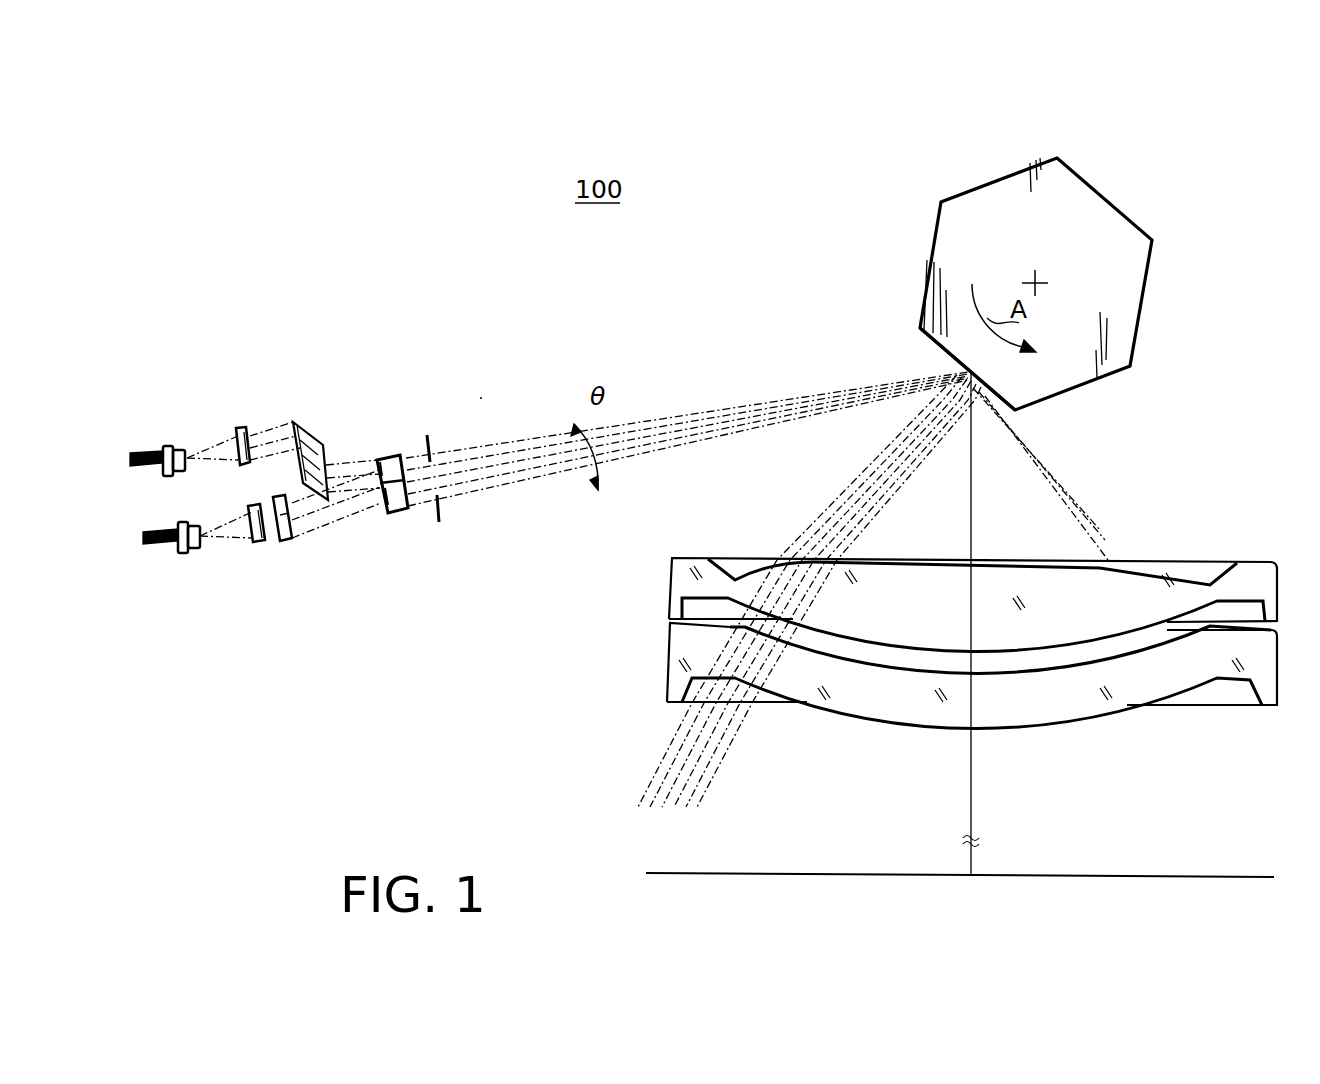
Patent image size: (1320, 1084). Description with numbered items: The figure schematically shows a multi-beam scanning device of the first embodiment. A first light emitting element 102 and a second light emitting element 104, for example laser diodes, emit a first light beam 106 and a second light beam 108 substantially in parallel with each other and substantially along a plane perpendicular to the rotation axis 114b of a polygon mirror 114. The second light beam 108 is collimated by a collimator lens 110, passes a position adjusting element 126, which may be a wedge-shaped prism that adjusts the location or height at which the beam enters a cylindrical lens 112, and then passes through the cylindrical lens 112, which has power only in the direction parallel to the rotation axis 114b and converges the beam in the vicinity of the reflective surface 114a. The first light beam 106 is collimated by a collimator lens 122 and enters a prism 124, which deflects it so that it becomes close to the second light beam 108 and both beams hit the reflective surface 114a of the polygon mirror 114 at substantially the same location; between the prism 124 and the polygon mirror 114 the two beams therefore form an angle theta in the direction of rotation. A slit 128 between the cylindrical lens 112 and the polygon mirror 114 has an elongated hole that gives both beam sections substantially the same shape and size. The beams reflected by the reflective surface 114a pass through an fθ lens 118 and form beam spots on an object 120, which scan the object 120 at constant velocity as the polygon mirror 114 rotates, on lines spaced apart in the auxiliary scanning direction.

The first light emitting element 102 is at (170, 447).
The second light emitting element 104 is at (188, 553).
The first light beam 106 is at (217, 442).
The second light beam 108 is at (228, 540).
The collimator lens 110 is at (256, 542).
The cylindrical lens 112 is at (402, 514).
The polygon mirror 114 is at (969, 192).
The reflective surface 114a is at (933, 340).
The rotation axis 114b is at (1075, 258).
The fθ lens 118 is at (657, 550).
The object 120 is at (663, 874).
The collimator lens 122 is at (240, 428).
The prism 124 is at (312, 428).
The position adjusting element 126 is at (292, 534).
The slit 128 is at (432, 442).